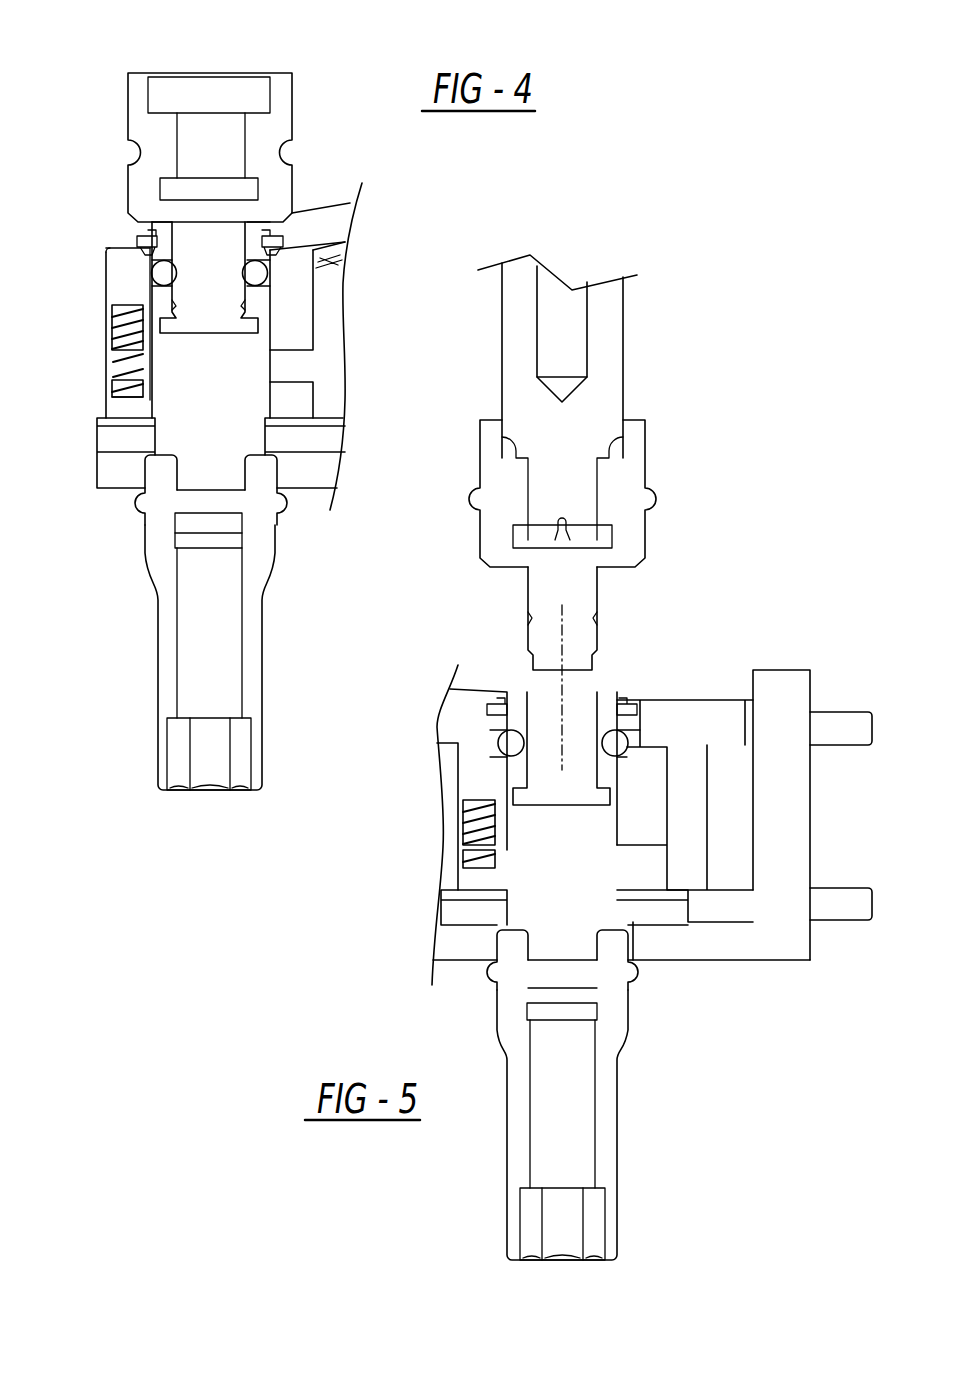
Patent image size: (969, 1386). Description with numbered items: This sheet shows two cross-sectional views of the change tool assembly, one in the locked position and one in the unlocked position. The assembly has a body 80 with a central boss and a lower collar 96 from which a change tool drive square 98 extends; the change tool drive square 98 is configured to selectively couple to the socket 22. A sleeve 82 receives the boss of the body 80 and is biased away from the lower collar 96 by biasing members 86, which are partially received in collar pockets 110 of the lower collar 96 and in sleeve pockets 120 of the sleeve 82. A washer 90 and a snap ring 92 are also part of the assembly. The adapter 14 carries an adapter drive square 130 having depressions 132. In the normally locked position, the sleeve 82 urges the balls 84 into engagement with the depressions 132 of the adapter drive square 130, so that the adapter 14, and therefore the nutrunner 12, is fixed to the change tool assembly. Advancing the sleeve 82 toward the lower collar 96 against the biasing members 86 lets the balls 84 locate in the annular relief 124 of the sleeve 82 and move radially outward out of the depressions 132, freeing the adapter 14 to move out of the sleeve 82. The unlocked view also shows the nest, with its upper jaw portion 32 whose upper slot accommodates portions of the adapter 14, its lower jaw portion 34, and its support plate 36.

In FIG. 5, the nutrunner 12 is at (617, 342).
In FIG. 4, the adapter 14 is at (284, 92).
In FIG. 5, the adapter 14 is at (630, 466).
In FIG. 4, the socket 22 is at (157, 632).
In FIG. 5, the socket 22 is at (617, 1110).
In FIG. 4, the upper jaw portion 32 is at (312, 206).
In FIG. 5, the upper jaw portion 32 is at (677, 697).
In FIG. 4, the lower jaw portion 34 is at (297, 449).
In FIG. 5, the lower jaw portion 34 is at (712, 948).
In FIG. 5, the support plate 36 is at (790, 827).
In FIG. 4, the body 80 is at (237, 382).
In FIG. 5, the body 80 is at (560, 883).
In FIG. 4, the sleeve 82 is at (293, 303).
In FIG. 5, the sleeve 82 is at (470, 785).
In FIG. 4, the balls 84 is at (135, 240).
In FIG. 5, the balls 84 is at (505, 741).
In FIG. 4, the biasing members 86 is at (115, 360).
In FIG. 5, the biasing members 86 is at (468, 832).
In FIG. 4, the washer 90 is at (281, 240).
In FIG. 4, the snap ring 92 is at (152, 232).
In FIG. 5, the lower collar 96 is at (648, 897).
In FIG. 4, the change tool drive square 98 is at (200, 523).
In FIG. 4, the collar pockets 110 is at (130, 393).
In FIG. 4, the sleeve pockets 120 is at (115, 318).
In FIG. 4, the annular relief 124 is at (285, 250).
In FIG. 5, the annular relief 124 is at (500, 757).
In FIG. 4, the adapter drive square 130 is at (178, 277).
In FIG. 5, the adapter drive square 130 is at (568, 587).
In FIG. 4, the depressions 132 is at (218, 285).